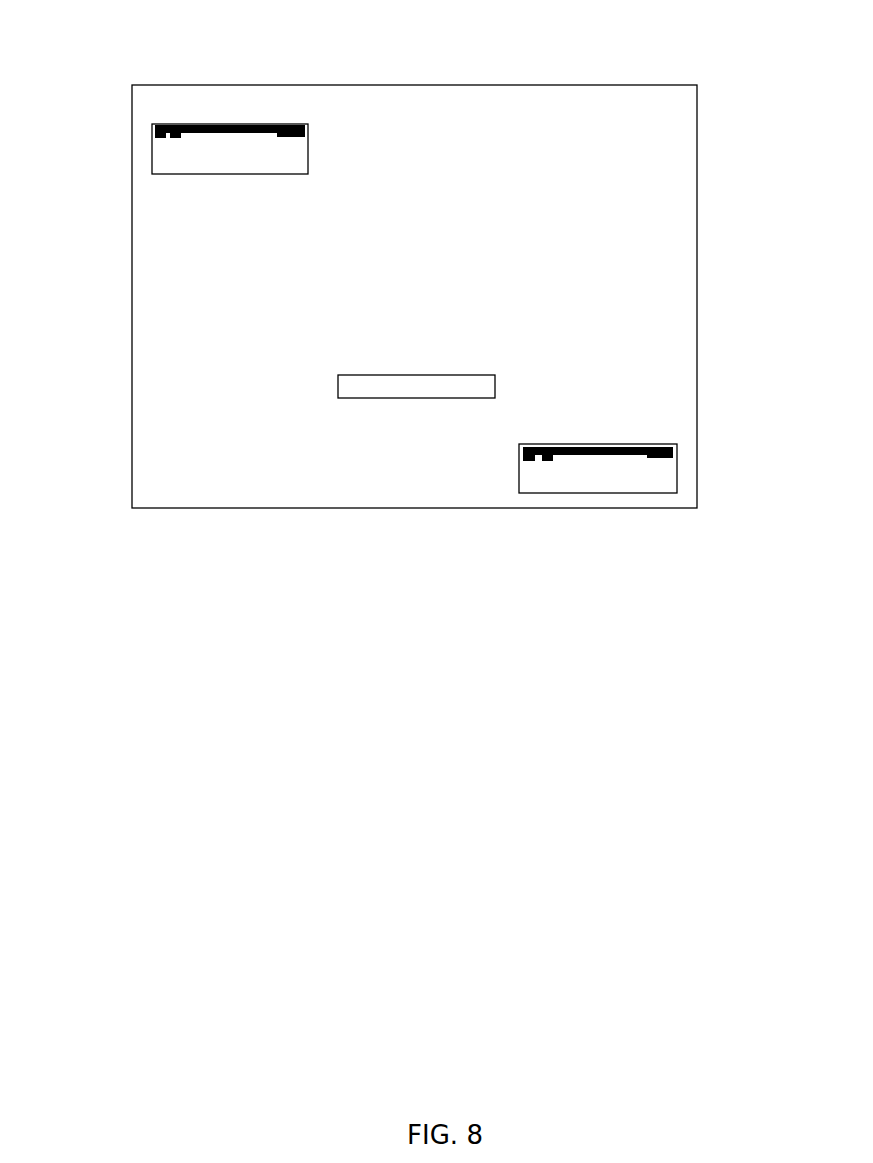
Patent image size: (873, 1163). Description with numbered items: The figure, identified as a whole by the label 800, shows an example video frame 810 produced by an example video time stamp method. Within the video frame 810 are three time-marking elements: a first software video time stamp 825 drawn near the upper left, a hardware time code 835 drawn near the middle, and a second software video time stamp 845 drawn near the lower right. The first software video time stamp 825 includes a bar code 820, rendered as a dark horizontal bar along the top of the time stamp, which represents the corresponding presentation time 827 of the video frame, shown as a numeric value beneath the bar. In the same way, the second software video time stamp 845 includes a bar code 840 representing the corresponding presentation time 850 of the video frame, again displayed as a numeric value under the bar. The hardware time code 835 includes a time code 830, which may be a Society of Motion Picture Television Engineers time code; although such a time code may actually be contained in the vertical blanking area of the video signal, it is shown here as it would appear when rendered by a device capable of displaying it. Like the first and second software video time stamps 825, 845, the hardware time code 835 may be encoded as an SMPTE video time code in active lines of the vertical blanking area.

The user interface display 800 is at (57, 30).
The video frame 810 is at (698, 177).
The bar code 820 is at (305, 133).
The first software video time stamp 825 is at (308, 160).
The presentation time 827 is at (258, 158).
The time code 830 is at (416, 375).
The hardware time code 835 is at (495, 386).
The bar code 840 is at (519, 457).
The second software video time stamp 845 is at (519, 468).
The presentation time 850 is at (587, 470).